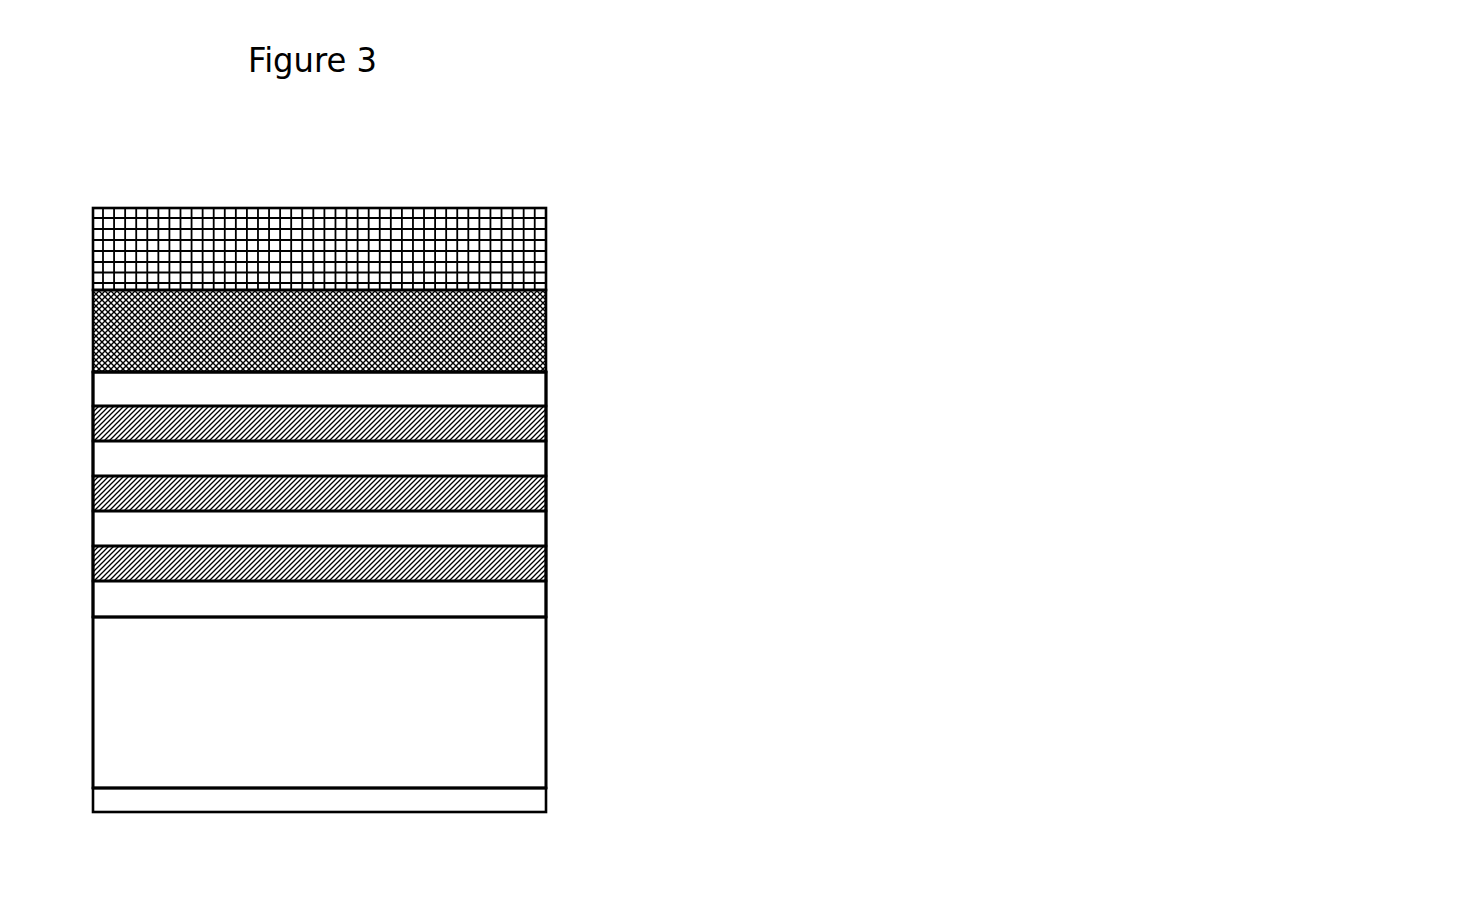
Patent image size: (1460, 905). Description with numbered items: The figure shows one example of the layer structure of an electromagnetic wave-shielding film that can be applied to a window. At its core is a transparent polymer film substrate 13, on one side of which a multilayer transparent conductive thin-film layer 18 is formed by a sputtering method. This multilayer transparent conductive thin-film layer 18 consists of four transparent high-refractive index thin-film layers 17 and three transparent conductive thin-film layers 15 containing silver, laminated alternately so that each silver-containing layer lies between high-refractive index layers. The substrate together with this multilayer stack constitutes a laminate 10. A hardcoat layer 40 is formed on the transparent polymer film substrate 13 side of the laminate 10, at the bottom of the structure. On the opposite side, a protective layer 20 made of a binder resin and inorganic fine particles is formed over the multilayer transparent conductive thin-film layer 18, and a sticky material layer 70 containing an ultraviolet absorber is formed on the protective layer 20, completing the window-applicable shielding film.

The sticky material layer 70 is at (570, 243).
The protective layer 20 is at (570, 325).
The transparent high-refractive index thin-film layer 17 is at (570, 393).
The transparent conductive thin-film layer 15 is at (570, 428).
The transparent polymer film substrate 13 is at (570, 708).
The hardcoat layer 40 is at (570, 798).
The multilayer transparent conductive thin-film layer 18 is at (1058, 369).
The laminate 10 is at (1275, 369).